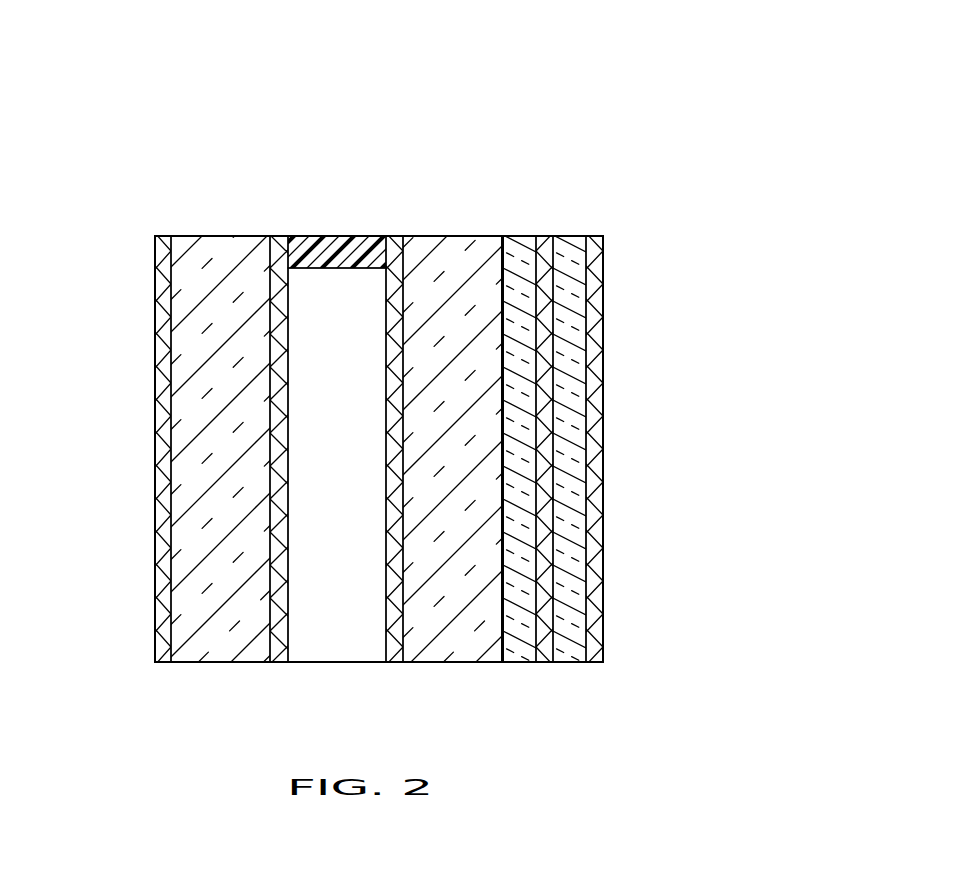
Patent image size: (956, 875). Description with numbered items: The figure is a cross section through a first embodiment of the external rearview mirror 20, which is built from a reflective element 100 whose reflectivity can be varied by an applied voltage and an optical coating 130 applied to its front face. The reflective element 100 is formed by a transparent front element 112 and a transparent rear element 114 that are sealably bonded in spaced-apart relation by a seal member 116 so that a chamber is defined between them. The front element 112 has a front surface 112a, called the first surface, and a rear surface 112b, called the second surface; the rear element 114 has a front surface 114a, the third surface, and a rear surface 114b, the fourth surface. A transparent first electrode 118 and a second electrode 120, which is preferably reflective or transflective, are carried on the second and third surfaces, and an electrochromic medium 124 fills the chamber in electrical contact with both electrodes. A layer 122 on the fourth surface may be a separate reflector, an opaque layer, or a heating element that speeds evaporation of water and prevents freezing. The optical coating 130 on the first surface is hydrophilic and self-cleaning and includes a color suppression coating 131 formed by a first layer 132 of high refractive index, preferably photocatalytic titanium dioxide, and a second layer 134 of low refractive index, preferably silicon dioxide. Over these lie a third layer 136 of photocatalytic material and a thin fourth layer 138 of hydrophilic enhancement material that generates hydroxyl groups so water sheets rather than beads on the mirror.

The mirror 20 is at (454, 110).
The reflective element 100 is at (502, 225).
The front element 112 is at (472, 233).
The front surface of front element 112a is at (500, 632).
The rear surface of front element 112b is at (405, 650).
The rear element 114 is at (256, 235).
The front surface of rear element 114a is at (270, 632).
The rear surface of rear element 114b is at (172, 636).
The seal member 116 is at (337, 233).
The first electrode 118 is at (388, 663).
The second electrode 120 is at (278, 663).
The reflector 122 is at (157, 463).
The electrochromic medium 124 is at (356, 474).
The optical coating 130 is at (603, 176).
The color suppression coating 131 is at (553, 672).
The first layer 132 is at (519, 233).
The second layer 134 is at (537, 233).
The third layer 136 is at (580, 233).
The fourth layer 138 is at (603, 313).